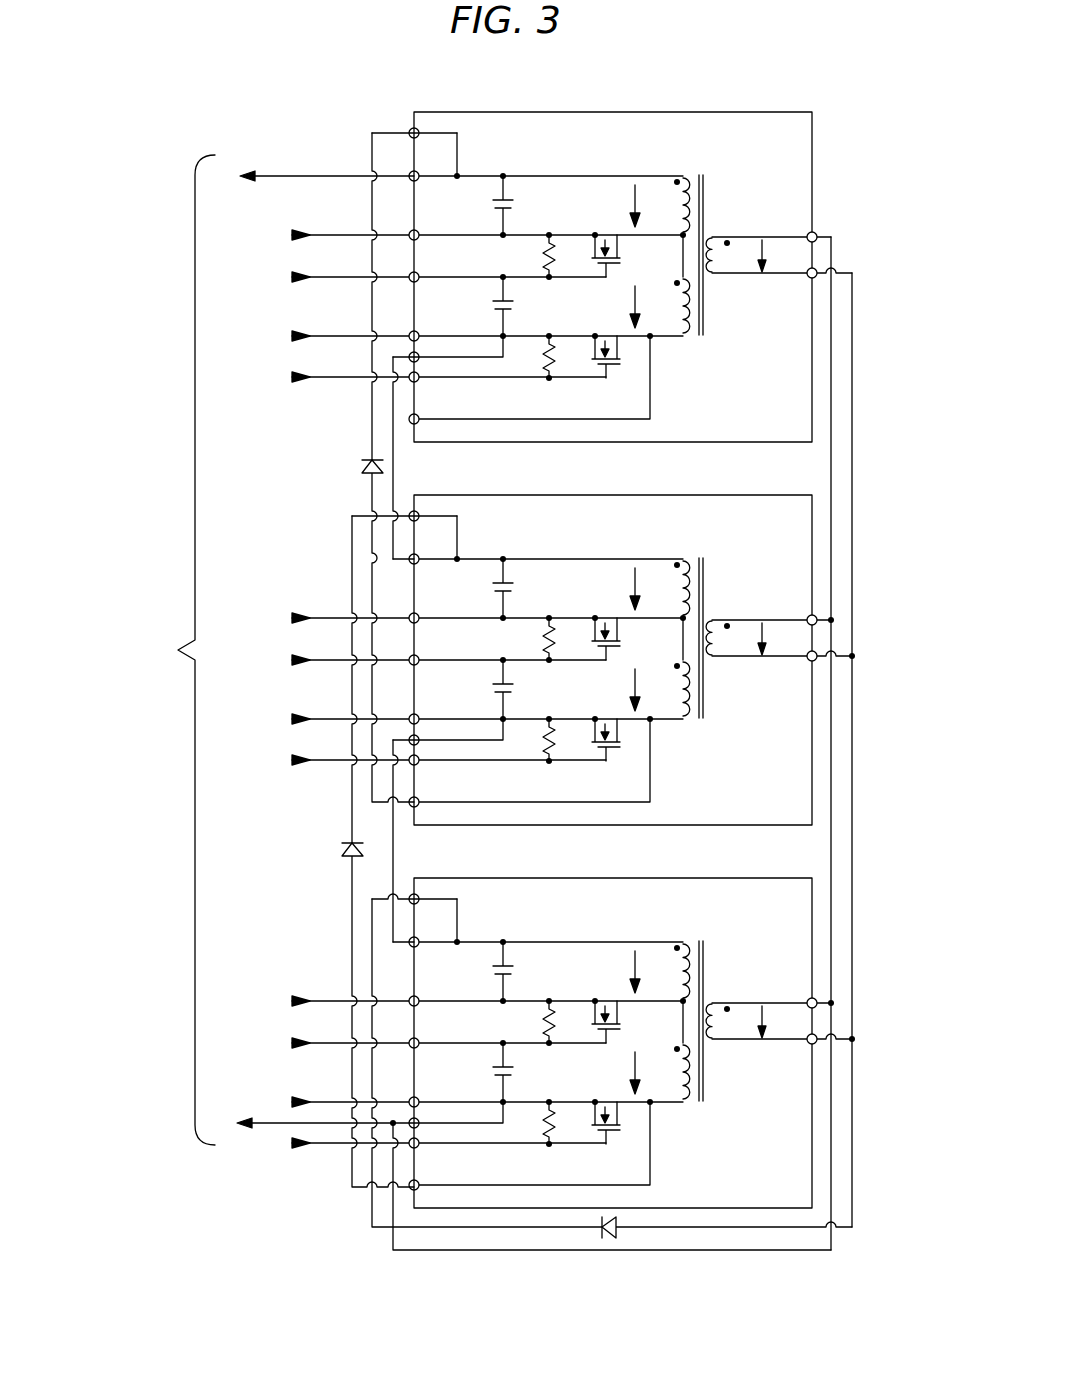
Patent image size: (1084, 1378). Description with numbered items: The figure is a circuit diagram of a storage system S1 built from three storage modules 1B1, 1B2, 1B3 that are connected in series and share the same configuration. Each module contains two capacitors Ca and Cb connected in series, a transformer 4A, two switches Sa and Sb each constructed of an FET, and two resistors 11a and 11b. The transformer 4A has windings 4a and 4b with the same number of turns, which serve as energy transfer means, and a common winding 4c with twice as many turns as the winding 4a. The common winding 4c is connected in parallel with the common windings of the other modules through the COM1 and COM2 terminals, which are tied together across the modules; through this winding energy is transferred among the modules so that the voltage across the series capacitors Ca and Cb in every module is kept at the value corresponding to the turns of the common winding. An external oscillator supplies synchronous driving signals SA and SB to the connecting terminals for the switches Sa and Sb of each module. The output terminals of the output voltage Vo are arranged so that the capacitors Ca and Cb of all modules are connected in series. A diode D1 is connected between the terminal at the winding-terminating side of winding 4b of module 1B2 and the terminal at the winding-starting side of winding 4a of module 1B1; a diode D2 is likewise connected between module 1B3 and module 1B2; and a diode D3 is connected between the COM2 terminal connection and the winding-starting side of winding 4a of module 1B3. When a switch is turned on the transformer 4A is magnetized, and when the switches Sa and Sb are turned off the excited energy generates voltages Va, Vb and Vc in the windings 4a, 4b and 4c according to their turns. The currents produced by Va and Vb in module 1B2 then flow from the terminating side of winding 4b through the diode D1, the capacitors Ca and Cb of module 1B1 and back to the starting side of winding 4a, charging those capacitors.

The storage system S1 is at (507, 84).
The storage module 1B1 is at (710, 112).
The storage module 1B2 is at (710, 495).
The storage module 1B3 is at (710, 878).
The capacitor Ca is at (496, 207).
The capacitor Cb is at (487, 689).
The resistor 11a is at (547, 266).
The resistor 11b is at (529, 740).
The switch Sa is at (620, 262).
The switch Sb is at (617, 748).
The voltage Va is at (620, 205).
The voltage Vb is at (608, 689).
The voltage Vc is at (773, 256).
The winding 4a is at (683, 222).
The winding 4b is at (668, 689).
The common winding 4c is at (718, 268).
The transformer 4A is at (705, 194).
The COM 1 terminal COM1 is at (861, 620).
The COM 2 terminal COM2 is at (861, 656).
The diode D1 is at (364, 460).
The diode D2 is at (344, 843).
The diode D3 is at (608, 1213).
The driving signal SA is at (283, 1051).
The driving signal SB is at (283, 1151).
The output voltage Vo is at (164, 650).